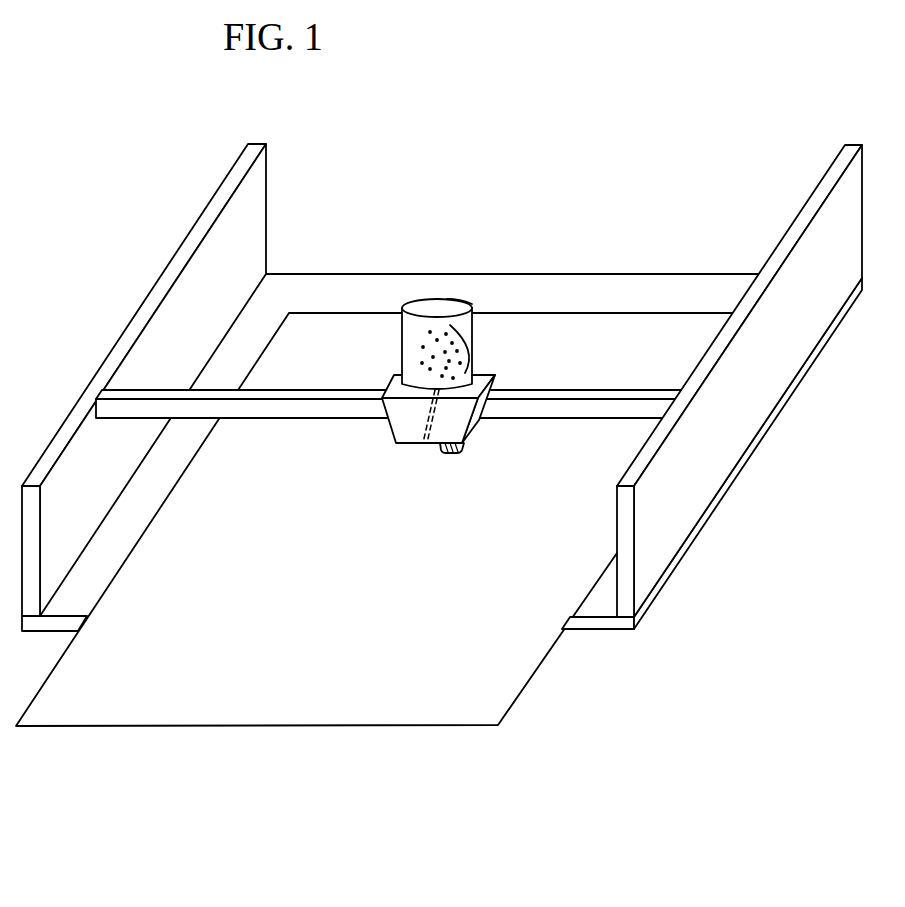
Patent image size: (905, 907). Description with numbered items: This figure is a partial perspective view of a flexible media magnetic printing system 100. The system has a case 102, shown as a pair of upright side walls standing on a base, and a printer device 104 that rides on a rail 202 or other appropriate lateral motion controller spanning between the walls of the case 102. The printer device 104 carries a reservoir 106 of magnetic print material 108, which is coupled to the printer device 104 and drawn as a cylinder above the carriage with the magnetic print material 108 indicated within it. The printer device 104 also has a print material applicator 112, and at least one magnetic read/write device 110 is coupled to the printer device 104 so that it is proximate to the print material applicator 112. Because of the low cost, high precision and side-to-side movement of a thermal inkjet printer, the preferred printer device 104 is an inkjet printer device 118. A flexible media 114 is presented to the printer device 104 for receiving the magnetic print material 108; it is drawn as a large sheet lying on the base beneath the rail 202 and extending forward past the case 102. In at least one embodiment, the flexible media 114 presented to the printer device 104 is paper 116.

The flexible media magnetic printing system 100 is at (716, 153).
The case 102 is at (642, 580).
The printer device 104 is at (395, 295).
The reservoir 106 is at (447, 298).
The magnetic print material 108 is at (470, 348).
The magnetic read/write device 110 is at (457, 450).
The print material applicator 112 is at (425, 443).
The flexible media 114 is at (455, 666).
The paper 116 is at (409, 697).
The inkjet printer device 118 is at (429, 277).
The rail 202 is at (647, 395).